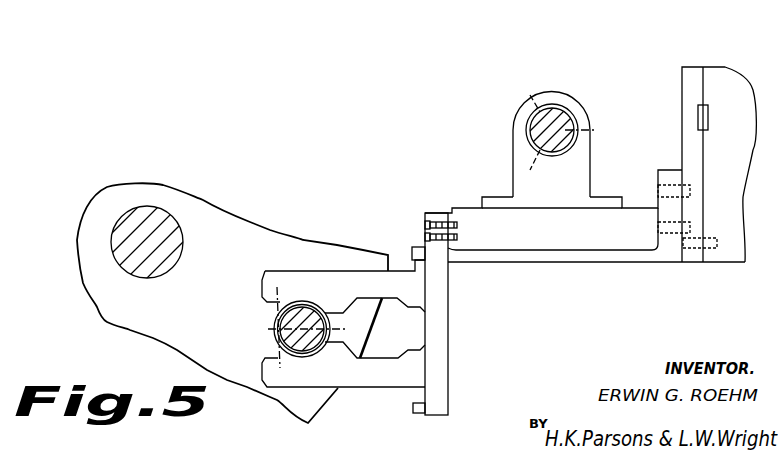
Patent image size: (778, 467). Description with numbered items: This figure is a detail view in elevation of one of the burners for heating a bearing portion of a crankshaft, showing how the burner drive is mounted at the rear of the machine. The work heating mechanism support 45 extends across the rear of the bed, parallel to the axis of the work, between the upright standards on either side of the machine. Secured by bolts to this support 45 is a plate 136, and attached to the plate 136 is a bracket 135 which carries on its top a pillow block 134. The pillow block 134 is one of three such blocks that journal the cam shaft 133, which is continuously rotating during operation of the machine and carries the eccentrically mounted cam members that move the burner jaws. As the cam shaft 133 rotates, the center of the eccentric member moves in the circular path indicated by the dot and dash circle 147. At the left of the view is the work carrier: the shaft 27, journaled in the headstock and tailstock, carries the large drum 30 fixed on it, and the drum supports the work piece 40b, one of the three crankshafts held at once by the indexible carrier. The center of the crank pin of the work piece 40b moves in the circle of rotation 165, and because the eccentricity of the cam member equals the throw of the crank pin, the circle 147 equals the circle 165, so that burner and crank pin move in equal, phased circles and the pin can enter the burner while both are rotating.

The shaft 27 is at (128, 221).
The drum 30 is at (205, 213).
The work piece 40b is at (275, 333).
The circle of rotation 165 is at (276, 340).
The dot and dash circle 147 is at (527, 122).
The cam shaft 133 is at (553, 115).
The pillow block 134 is at (580, 175).
The bracket 135 is at (636, 262).
The plate 136 is at (690, 130).
The work heating mechanism support 45 is at (716, 75).